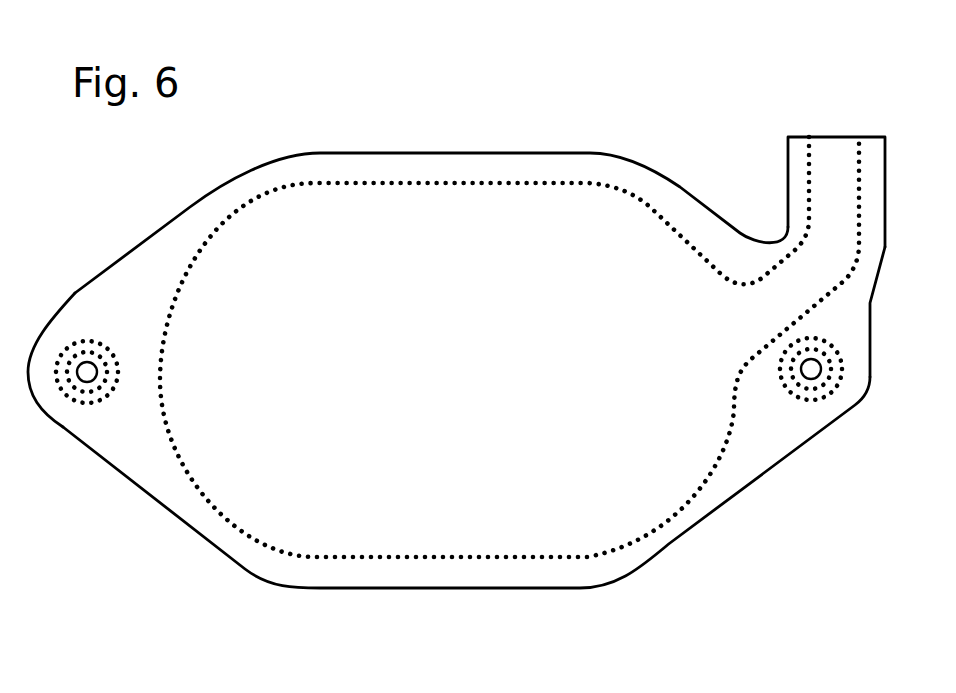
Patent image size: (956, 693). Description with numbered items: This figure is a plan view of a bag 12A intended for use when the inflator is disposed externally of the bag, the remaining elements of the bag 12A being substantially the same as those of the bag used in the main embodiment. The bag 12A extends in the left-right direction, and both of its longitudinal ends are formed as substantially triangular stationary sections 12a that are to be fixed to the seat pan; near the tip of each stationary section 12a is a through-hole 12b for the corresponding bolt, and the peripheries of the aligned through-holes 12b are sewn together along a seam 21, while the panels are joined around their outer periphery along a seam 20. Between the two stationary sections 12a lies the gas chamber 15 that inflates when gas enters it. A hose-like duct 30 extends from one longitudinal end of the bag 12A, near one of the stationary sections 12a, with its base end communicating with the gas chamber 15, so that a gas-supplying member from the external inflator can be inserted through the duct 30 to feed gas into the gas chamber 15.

The bag 12A is at (623, 119).
The stationary section 12a is at (36, 352).
The through-hole 12b is at (76, 381).
The gas chamber 15 is at (393, 447).
The seam 20 is at (441, 182).
The seam 21 is at (109, 346).
The duct 30 is at (835, 147).